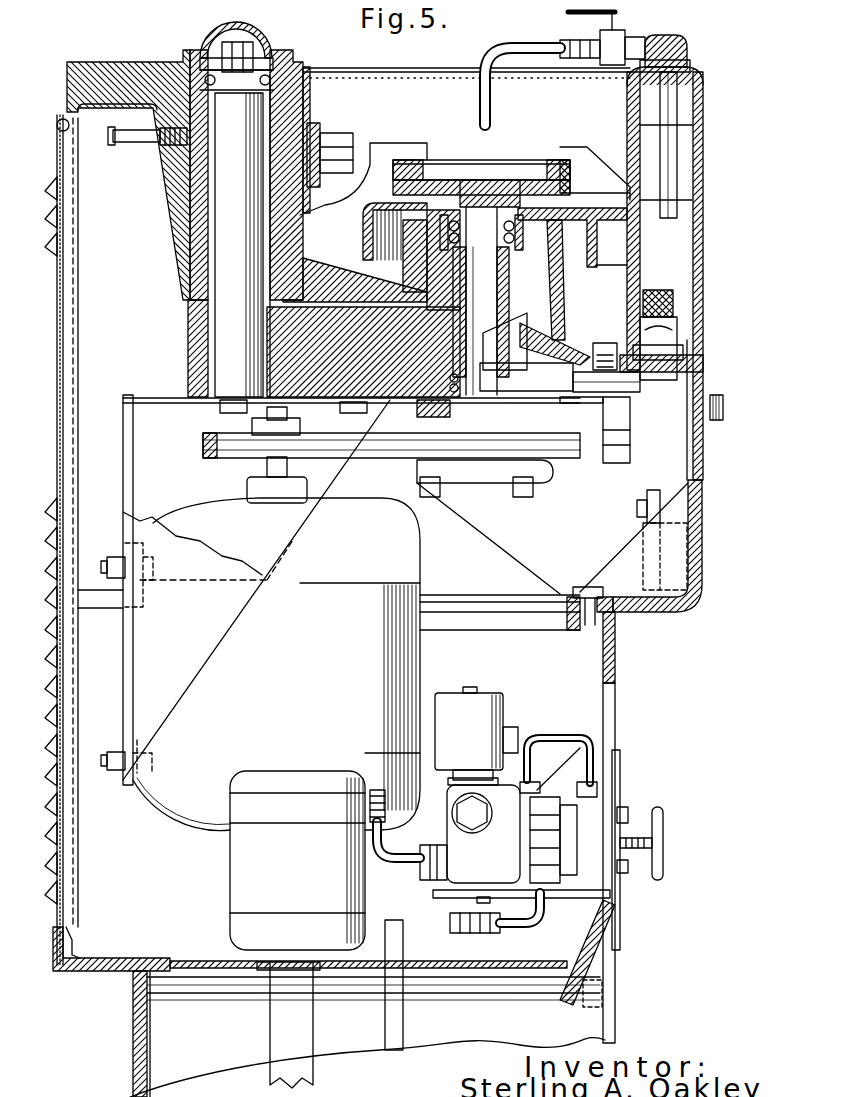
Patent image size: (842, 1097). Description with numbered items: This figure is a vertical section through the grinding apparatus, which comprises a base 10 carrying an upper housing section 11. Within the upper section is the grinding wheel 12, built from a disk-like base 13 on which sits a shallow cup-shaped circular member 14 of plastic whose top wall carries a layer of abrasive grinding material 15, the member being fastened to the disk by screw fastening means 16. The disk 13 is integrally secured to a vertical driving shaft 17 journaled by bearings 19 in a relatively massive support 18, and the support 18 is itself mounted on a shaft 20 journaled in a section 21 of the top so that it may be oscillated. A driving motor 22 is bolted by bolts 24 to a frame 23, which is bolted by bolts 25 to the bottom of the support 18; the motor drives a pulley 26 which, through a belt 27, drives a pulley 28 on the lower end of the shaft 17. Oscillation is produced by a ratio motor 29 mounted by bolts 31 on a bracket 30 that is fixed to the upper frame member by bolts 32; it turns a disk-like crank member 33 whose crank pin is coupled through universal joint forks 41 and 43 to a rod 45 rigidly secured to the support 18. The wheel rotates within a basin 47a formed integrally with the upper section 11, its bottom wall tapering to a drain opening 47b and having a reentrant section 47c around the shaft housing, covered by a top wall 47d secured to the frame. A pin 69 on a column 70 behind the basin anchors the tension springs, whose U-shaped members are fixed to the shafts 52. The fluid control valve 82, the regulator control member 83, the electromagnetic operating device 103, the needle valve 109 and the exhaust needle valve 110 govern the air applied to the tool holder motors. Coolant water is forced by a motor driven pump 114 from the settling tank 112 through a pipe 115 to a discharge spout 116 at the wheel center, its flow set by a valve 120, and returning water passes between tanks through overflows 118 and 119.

The base 10 is at (615, 650).
The upper housing section 11 is at (697, 548).
The grinding wheel 12 is at (380, 173).
The disk-like base 13 is at (565, 198).
The cup-shaped circular member 14 is at (575, 165).
The abrasive grinding material 15 is at (405, 160).
The screw fastening means 16 is at (433, 168).
The driving shaft 17 is at (490, 305).
The support 18 is at (188, 335).
The bearings 19 is at (515, 238).
The shaft 20 is at (222, 235).
The section of the top 21 is at (183, 268).
The driving motor 22 is at (415, 545).
The frame 23 is at (123, 475).
The bolts 24 is at (108, 558).
The bolts 25 is at (222, 407).
The pulley 26 is at (240, 458).
The belt 27 is at (203, 448).
The pulley 28 is at (545, 462).
The ratio motor 29 is at (565, 418).
The bracket 30 is at (520, 552).
The bolts 31 is at (435, 487).
The bolts 32 is at (637, 510).
The disk-like crank member 33 is at (632, 452).
The fork 41 is at (665, 328).
The fork 43 is at (677, 355).
The rod 45 is at (560, 368).
The basin 47a is at (305, 88).
The drain opening 47b is at (602, 345).
The reentrant section 47c is at (565, 288).
The top wall 47d is at (365, 238).
The shafts 52 is at (335, 140).
The pin 69 is at (140, 145).
The column 70 is at (172, 188).
The fluid control valve 82 is at (445, 820).
The control member 83 is at (665, 860).
The electromagnetic operating device 103 is at (510, 710).
The adjustable needle valve 109 is at (625, 805).
The exhaust needle valve 110 is at (625, 875).
The settling tank 112 is at (147, 1080).
The motor driven pump 114 is at (270, 1043).
The pipe 115 is at (672, 120).
The discharge spout 116 is at (505, 55).
The overflow 118 is at (475, 995).
The overflow 119 is at (512, 995).
The valve 120 is at (625, 20).